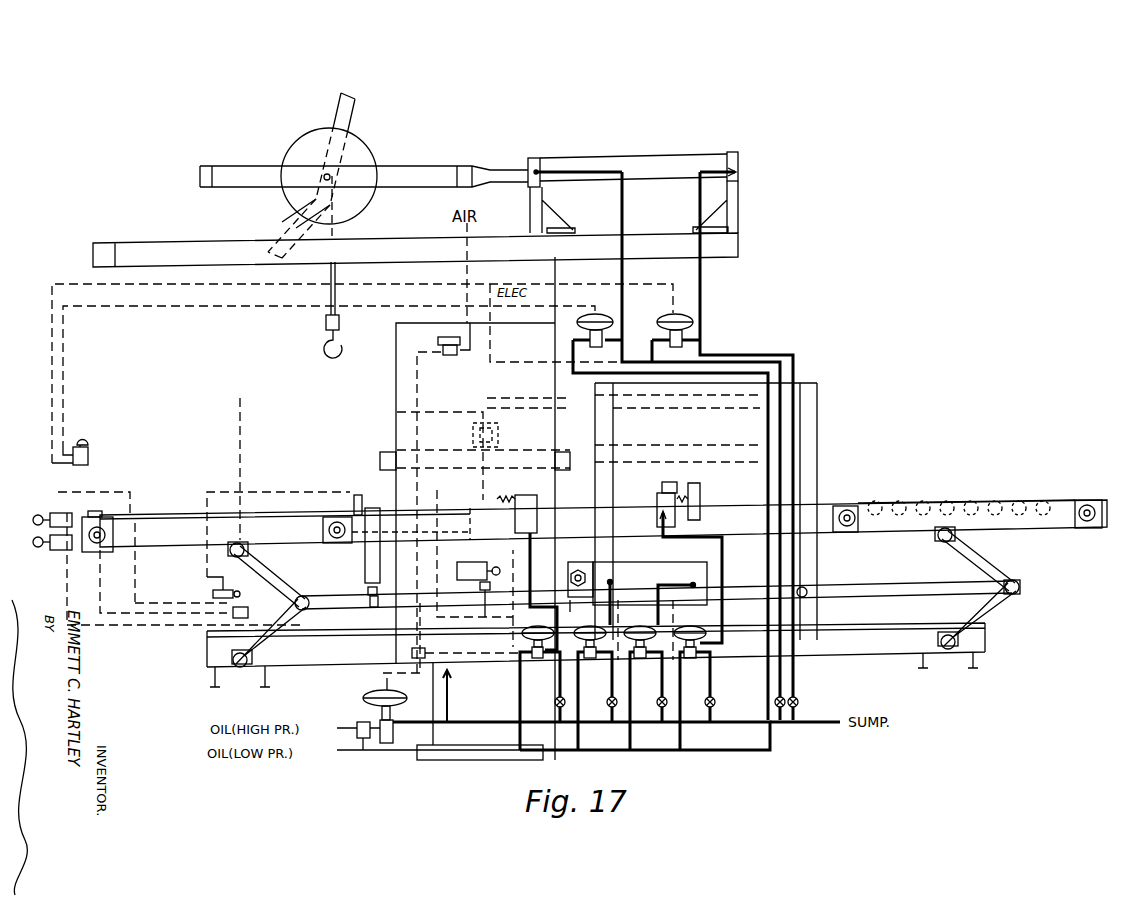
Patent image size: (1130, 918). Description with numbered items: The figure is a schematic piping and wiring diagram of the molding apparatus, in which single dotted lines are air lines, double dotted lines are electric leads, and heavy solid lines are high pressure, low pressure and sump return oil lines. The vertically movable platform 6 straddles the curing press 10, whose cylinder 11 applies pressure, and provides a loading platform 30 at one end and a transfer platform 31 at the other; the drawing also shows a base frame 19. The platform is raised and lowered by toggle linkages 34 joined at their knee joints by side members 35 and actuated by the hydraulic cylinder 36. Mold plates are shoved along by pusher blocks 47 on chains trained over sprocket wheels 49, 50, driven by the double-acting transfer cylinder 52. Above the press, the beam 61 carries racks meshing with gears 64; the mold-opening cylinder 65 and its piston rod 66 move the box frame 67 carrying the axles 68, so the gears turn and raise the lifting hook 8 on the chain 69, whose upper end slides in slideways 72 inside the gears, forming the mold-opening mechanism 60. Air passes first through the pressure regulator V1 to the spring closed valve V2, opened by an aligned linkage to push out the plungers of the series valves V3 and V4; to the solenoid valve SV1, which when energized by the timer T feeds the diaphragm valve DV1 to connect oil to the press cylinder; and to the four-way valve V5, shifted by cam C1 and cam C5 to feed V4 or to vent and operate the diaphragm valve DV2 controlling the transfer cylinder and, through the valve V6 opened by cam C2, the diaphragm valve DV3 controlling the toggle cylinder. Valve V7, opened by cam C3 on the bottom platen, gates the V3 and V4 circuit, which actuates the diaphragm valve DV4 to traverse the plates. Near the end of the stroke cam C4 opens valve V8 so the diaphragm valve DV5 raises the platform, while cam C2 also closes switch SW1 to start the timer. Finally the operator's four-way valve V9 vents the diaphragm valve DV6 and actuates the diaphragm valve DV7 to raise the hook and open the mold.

The platform 6 is at (1061, 491).
The lifting hook 8 is at (323, 356).
The curing press 10 is at (385, 391).
The cylinder of the curing press 11 is at (472, 717).
The base frame 19 is at (882, 642).
The loading platform 30 is at (188, 505).
The transfer platform 31 is at (946, 491).
The toggle linkages 34 is at (278, 580).
The side members 35 is at (322, 595).
The hydraulic cylinder 36 is at (660, 572).
The pusher blocks 47 is at (100, 507).
The sprocket wheels 49 is at (107, 517).
The sprocket wheels 50 is at (332, 513).
The transfer cylinder 52 is at (578, 507).
The mold-opening mechanism 60 is at (617, 150).
The beam 61 is at (728, 243).
The gears 64 is at (367, 147).
The mold-opening hydraulic cylinder 65 is at (670, 162).
The piston rod 66 is at (512, 162).
The box frame 67 is at (420, 166).
The axles 68 is at (331, 177).
The chain 69 is at (333, 232).
The slideways 72 is at (347, 107).
The pressure regulator V1 is at (452, 357).
The spring closed two-way valve V2 is at (213, 592).
The two-way valve V3 is at (50, 548).
The two-way valve V4 is at (50, 513).
The four-way valve V5 is at (462, 565).
The two-way spring-closed valve V6 is at (657, 497).
The two-way spring-closed valve V7 is at (377, 610).
The spring closed two-way valve V8 is at (528, 496).
The four-way valve V9 is at (90, 452).
The cam C1 is at (490, 612).
The cam C2 is at (695, 497).
The cam C3 is at (365, 567).
The cam C4 is at (358, 497).
The cam C5 is at (572, 602).
The timer T is at (500, 433).
The switch SW1 is at (673, 483).
The solenoid valve SV1 is at (403, 653).
The diaphragm-operated hydraulic valve DV1 is at (370, 705).
The diaphragm-operated valve DV2 is at (700, 658).
The diaphragm-operated valve DV3 is at (592, 660).
The diaphragm-operated valve DV4 is at (533, 653).
The diaphragm-operated valve DV5 is at (642, 660).
The diaphragm valve DV6 is at (683, 313).
The diaphragm valve DV7 is at (612, 317).